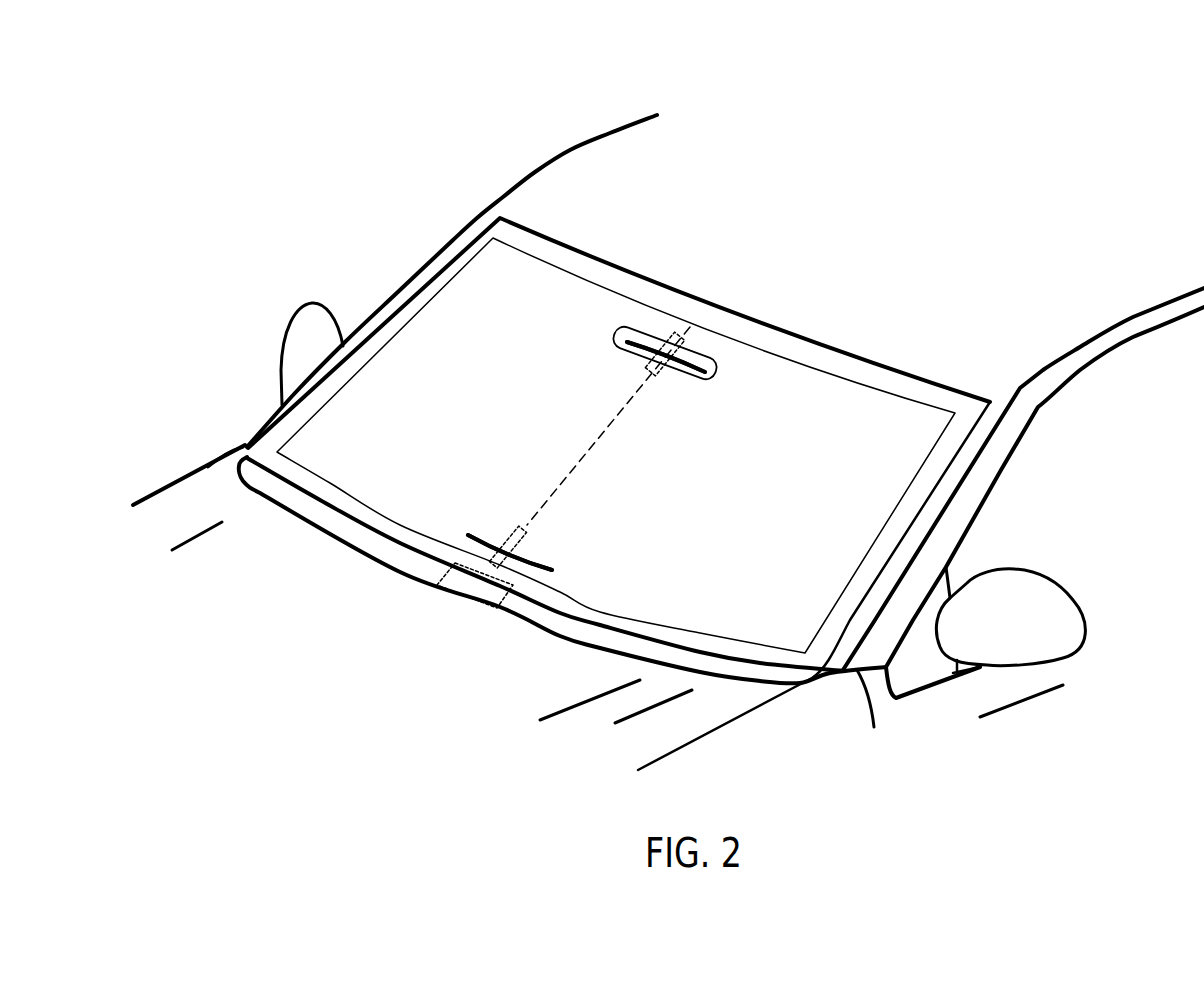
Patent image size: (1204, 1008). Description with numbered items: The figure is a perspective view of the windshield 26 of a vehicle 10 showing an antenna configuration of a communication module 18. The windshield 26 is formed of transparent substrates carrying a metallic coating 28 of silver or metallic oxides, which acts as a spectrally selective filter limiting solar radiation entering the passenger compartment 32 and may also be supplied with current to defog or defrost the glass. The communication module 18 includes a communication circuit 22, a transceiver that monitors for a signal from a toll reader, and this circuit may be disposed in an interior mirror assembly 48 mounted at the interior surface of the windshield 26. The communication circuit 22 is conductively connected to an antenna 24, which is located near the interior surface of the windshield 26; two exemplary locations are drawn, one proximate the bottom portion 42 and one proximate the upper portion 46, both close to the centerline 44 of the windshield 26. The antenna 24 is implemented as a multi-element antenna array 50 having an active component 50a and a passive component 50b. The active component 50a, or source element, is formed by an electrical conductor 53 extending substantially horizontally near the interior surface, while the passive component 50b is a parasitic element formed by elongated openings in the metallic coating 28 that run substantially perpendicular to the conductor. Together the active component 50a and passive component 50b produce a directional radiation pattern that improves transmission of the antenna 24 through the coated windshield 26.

The vehicle 10 is at (511, 98).
The communication module 18 is at (604, 461).
The communication circuit 22 is at (703, 360).
The antenna 24 is at (560, 436).
The windshield 26 is at (618, 487).
The metallic coating 28 is at (480, 273).
The passenger compartment 32 is at (1036, 516).
The bottom portion 42 is at (576, 583).
The centerline 44 is at (572, 470).
The upper portion 46 is at (726, 369).
The interior mirror assembly 48 is at (657, 343).
The multi-element antenna array 50 is at (652, 345).
The active component 50a is at (540, 456).
The passive component 50b is at (652, 375).
The electrical conductor 53 is at (648, 359).